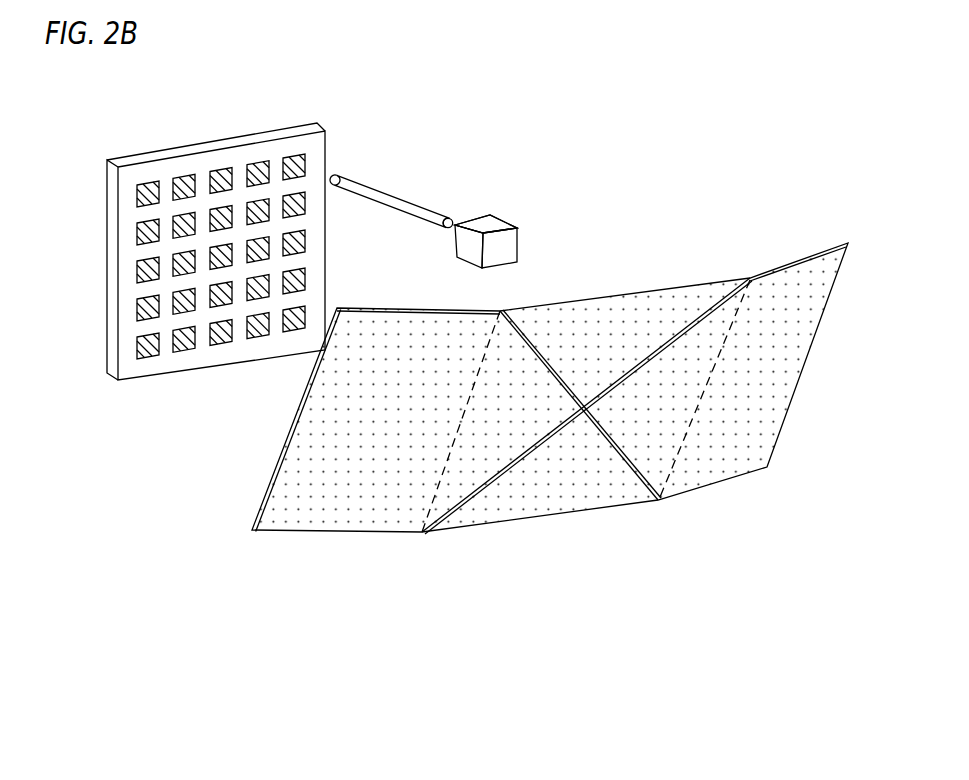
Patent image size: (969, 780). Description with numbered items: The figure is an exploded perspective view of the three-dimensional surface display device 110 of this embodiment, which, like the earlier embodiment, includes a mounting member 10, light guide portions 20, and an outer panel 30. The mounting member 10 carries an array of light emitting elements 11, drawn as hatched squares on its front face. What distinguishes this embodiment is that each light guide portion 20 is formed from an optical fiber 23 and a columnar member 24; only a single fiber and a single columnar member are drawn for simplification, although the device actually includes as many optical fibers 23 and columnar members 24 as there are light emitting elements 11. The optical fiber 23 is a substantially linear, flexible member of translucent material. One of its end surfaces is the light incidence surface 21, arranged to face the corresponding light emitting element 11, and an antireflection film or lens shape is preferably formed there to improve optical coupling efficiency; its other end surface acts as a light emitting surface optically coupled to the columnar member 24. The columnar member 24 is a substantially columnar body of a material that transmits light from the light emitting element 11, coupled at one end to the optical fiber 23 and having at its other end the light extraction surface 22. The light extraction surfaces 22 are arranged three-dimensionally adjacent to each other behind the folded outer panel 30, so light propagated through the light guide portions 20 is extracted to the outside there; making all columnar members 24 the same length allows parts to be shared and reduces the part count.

The mounting member 10 is at (242, 225).
The light emitting element 11 is at (208, 178).
The light guide portion 20 is at (460, 183).
The light incidence surface 21 is at (337, 180).
The light extraction surface 22 is at (505, 251).
The optical fiber 23 is at (412, 208).
The columnar member 24 is at (508, 204).
The outer panel 30 is at (777, 395).
The three-dimensional surface display device 110 is at (498, 593).